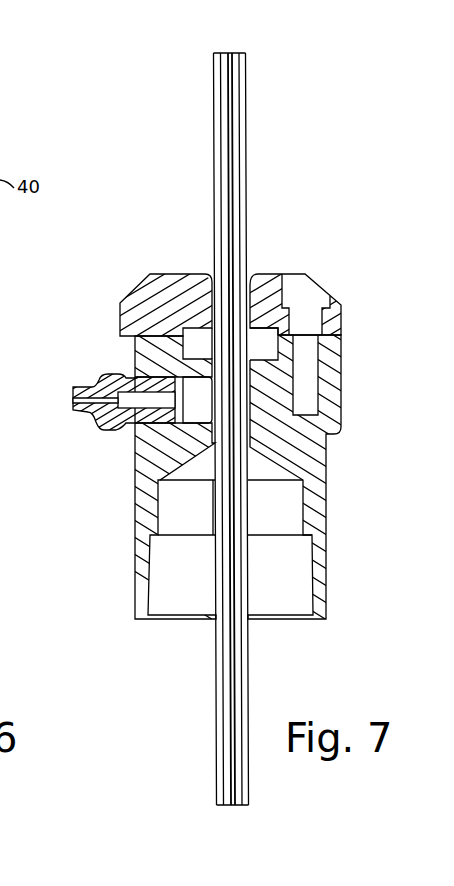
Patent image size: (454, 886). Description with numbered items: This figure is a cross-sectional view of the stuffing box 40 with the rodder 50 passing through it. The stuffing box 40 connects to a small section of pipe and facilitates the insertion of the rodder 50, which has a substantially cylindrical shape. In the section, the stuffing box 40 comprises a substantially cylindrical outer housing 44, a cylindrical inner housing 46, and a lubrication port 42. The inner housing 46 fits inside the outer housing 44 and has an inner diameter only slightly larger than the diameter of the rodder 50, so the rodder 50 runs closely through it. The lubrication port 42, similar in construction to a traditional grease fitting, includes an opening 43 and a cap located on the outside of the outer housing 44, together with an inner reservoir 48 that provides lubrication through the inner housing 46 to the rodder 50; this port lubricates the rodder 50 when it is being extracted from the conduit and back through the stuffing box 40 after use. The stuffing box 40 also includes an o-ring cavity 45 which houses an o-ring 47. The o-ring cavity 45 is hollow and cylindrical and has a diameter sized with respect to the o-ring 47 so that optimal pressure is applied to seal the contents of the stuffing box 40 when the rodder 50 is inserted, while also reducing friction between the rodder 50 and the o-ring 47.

The stuffing box 40 is at (311, 211).
The lubrication port 42 is at (88, 414).
The opening 43 is at (72, 398).
The outer housing 44 is at (137, 562).
The o-ring cavity 45 is at (282, 360).
The inner housing 46 is at (247, 313).
The o-ring 47 is at (272, 350).
The inner reservoir 48 is at (203, 398).
The rodder 50 is at (232, 102).